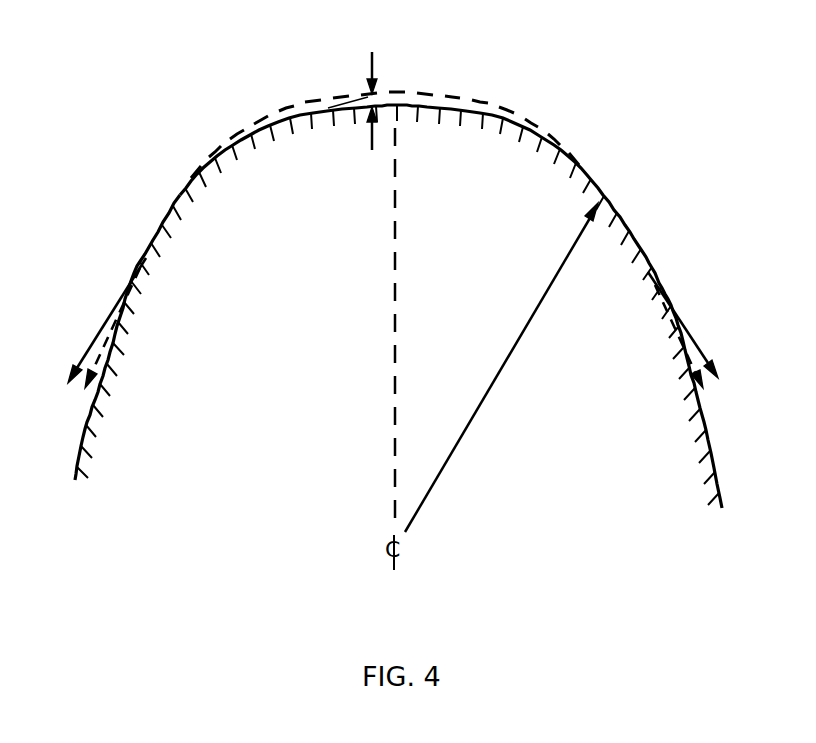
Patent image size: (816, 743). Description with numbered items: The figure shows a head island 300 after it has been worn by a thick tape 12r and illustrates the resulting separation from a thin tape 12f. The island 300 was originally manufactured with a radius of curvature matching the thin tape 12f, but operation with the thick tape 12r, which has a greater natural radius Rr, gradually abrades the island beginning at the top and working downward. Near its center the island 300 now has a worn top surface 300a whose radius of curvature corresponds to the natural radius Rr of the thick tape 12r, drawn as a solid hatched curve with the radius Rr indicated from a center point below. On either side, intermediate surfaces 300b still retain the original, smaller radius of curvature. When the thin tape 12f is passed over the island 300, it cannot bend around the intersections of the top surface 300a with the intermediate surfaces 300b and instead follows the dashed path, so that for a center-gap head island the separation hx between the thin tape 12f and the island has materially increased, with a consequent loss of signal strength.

The island 300 is at (150, 135).
The top surface 300a is at (500, 128).
The intermediate surfaces 300b is at (181, 206).
The thin tape 12f is at (450, 98).
The thick tape 12r is at (528, 124).
The separation hx is at (333, 110).
The natural radius Rr is at (460, 441).